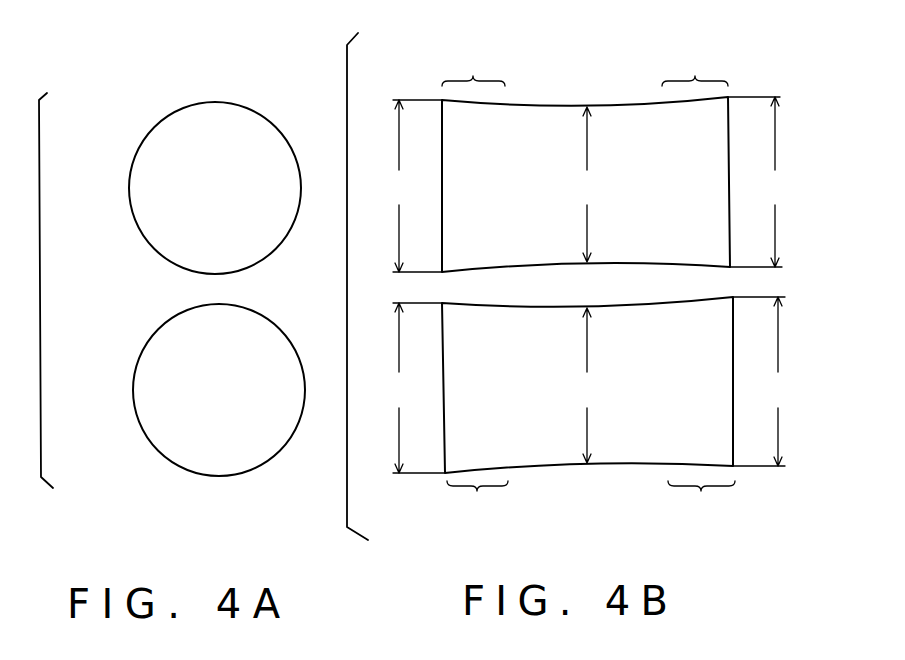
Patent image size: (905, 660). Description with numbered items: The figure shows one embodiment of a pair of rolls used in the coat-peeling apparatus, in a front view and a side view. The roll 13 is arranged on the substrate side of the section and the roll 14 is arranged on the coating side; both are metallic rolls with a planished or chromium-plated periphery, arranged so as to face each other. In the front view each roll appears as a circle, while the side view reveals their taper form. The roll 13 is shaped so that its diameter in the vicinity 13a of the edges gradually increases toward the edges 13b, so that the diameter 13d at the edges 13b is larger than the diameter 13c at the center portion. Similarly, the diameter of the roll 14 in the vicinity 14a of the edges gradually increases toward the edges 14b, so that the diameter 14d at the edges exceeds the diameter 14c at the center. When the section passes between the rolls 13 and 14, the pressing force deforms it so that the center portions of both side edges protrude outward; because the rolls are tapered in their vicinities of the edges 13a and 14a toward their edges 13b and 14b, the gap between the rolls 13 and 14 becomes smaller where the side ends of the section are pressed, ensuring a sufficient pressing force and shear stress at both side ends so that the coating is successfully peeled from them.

In FIG. 4A, the roll on the substrate side 13 is at (140, 391).
In FIG. 4B, the roll on the substrate side 13 is at (617, 455).
In FIG. 4B, the vicinity of the edges of the roll 13a is at (591, 505).
In FIG. 4B, the edges of the roll 13b is at (445, 476).
In FIG. 4B, the diameter at the center portion 13c is at (585, 385).
In FIG. 4B, the diameter at the edges 13d is at (591, 385).
In FIG. 4A, the roll on the coating side 14 is at (140, 186).
In FIG. 4B, the roll on the coating side 14 is at (608, 114).
In FIG. 4B, the vicinity of the edges of the roll 14a is at (585, 66).
In FIG. 4B, the edges of the roll 14b is at (441, 99).
In FIG. 4B, the diameter at the center portion 14c is at (585, 184).
In FIG. 4B, the diameter at the edges 14d is at (589, 184).